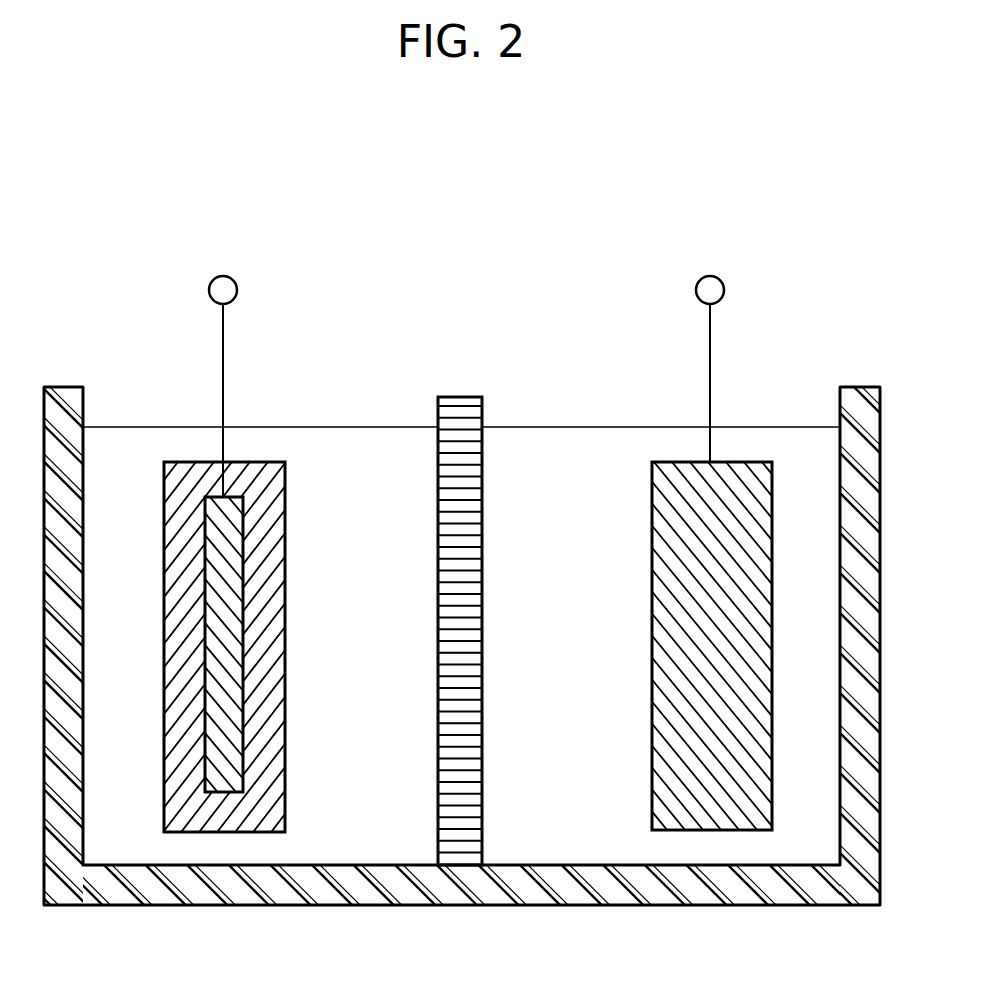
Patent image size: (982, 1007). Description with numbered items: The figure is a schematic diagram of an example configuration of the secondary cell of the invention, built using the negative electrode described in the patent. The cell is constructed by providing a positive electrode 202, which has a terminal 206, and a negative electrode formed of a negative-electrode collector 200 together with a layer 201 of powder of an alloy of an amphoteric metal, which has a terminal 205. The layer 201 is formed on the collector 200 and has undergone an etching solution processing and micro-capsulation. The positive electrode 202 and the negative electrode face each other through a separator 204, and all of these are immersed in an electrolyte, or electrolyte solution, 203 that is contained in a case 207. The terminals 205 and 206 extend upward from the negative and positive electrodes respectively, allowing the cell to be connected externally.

The negative-electrode collector 200 is at (233, 780).
The layer of powder of an alloy of an amphoteric metal 201 is at (210, 775).
The positive electrode 202 is at (708, 795).
The electrolyte 203 is at (525, 812).
The separator 204 is at (460, 397).
The terminal 205 is at (220, 277).
The terminal 206 is at (707, 277).
The case 207 is at (112, 890).